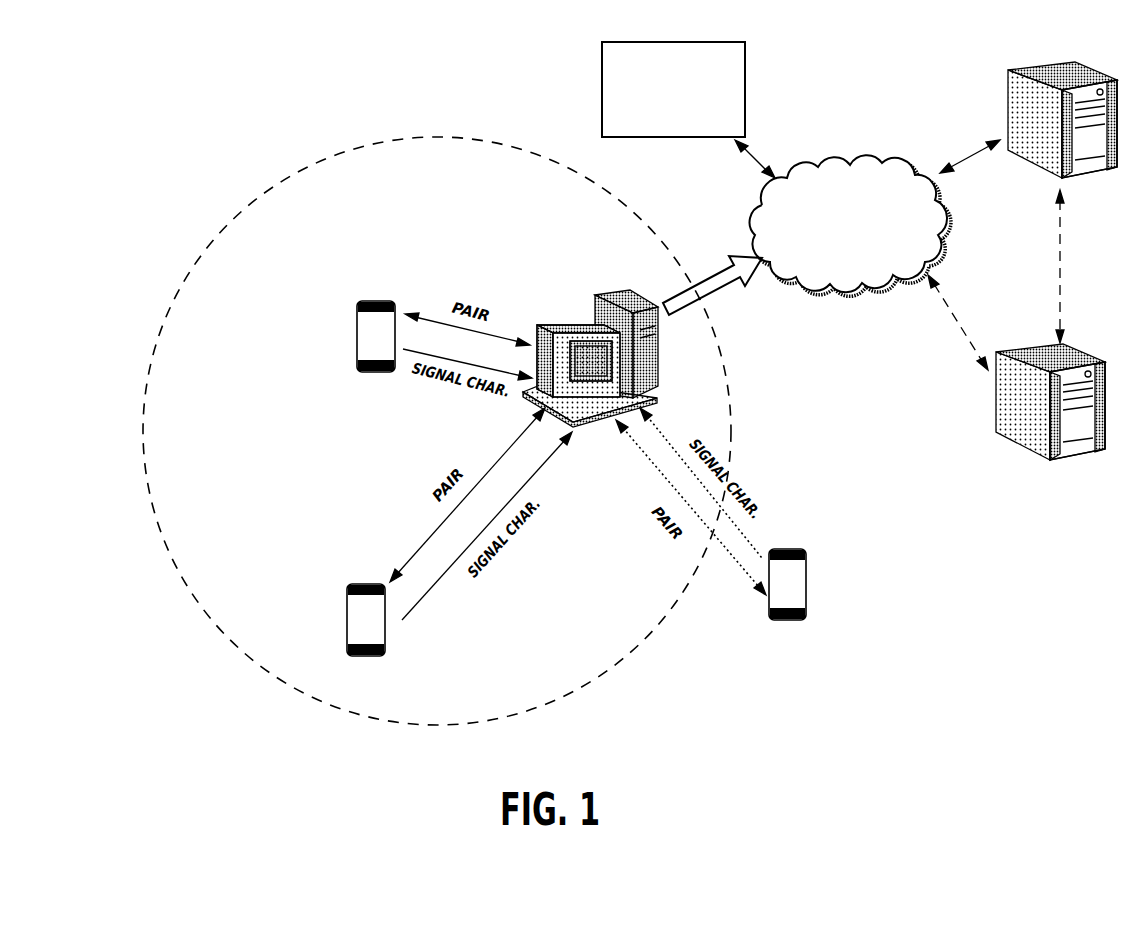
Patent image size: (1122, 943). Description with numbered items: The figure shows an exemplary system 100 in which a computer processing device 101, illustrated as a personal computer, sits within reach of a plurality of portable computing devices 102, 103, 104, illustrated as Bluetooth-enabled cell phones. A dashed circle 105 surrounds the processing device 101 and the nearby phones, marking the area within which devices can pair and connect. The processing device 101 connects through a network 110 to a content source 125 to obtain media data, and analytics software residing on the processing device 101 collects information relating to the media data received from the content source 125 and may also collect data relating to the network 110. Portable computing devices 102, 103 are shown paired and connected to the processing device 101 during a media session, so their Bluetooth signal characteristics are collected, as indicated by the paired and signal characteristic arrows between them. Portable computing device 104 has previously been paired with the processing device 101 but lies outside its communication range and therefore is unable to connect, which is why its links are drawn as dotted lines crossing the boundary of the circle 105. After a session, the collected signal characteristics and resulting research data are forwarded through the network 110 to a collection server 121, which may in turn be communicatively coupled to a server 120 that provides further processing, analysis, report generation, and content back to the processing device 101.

The system 100 is at (230, 102).
The computer processing device 101 is at (590, 356).
The portable computing device 102 is at (376, 353).
The portable computing device 103 is at (366, 636).
The portable computing device 104 is at (787, 601).
The communication range 105 is at (193, 244).
The network 110 is at (850, 225).
The server 120 is at (1050, 417).
The collection server 121 is at (1038, 119).
The content source 125 is at (673, 89).